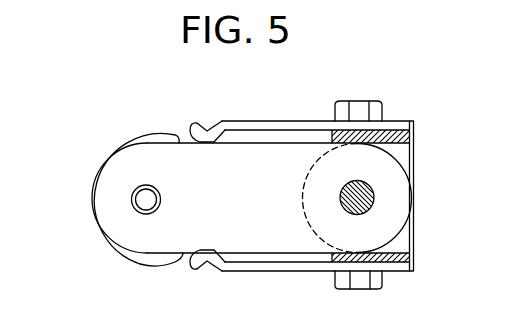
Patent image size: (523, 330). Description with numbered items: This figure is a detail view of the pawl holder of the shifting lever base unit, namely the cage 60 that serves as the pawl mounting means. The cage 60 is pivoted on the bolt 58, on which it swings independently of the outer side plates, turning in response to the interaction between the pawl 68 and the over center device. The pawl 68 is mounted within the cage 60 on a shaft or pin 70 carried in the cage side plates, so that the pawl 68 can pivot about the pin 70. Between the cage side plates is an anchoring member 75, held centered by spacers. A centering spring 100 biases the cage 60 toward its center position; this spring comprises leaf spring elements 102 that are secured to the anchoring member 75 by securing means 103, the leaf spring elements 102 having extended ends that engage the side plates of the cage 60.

The centering spring 100 is at (292, 118).
The leaf spring elements 102 is at (228, 121).
The securing means 103 is at (373, 110).
The anchoring member 75 is at (409, 156).
The bolt 58 is at (374, 198).
The pawl 68 is at (143, 163).
The shaft or pin 70 is at (131, 203).
The cage 60 is at (136, 268).